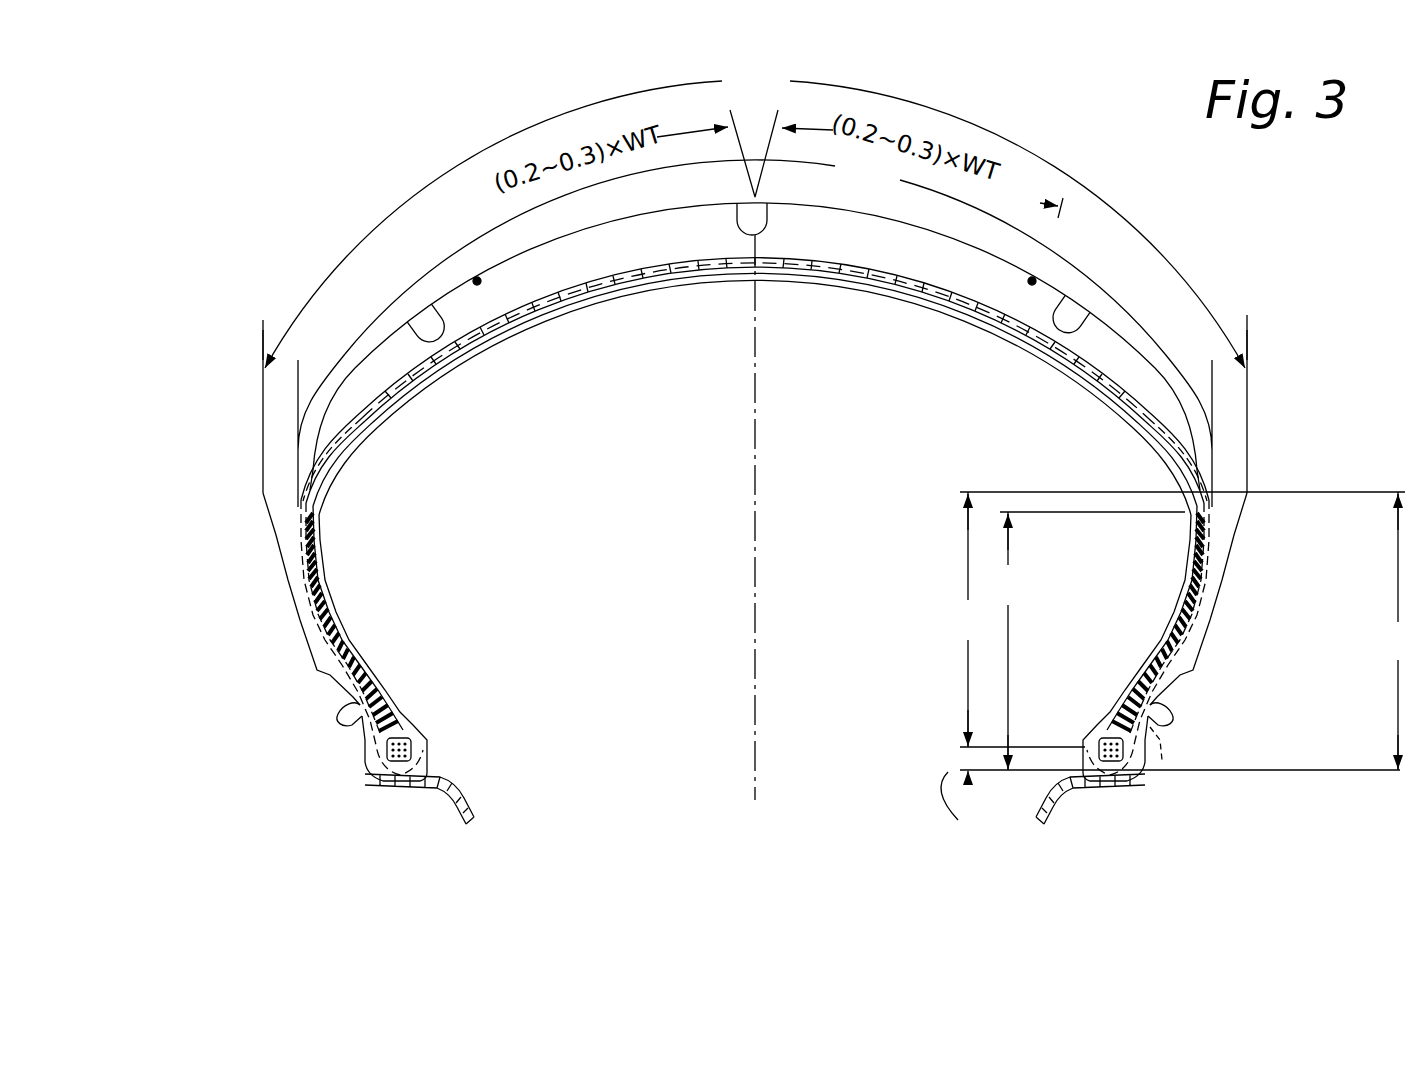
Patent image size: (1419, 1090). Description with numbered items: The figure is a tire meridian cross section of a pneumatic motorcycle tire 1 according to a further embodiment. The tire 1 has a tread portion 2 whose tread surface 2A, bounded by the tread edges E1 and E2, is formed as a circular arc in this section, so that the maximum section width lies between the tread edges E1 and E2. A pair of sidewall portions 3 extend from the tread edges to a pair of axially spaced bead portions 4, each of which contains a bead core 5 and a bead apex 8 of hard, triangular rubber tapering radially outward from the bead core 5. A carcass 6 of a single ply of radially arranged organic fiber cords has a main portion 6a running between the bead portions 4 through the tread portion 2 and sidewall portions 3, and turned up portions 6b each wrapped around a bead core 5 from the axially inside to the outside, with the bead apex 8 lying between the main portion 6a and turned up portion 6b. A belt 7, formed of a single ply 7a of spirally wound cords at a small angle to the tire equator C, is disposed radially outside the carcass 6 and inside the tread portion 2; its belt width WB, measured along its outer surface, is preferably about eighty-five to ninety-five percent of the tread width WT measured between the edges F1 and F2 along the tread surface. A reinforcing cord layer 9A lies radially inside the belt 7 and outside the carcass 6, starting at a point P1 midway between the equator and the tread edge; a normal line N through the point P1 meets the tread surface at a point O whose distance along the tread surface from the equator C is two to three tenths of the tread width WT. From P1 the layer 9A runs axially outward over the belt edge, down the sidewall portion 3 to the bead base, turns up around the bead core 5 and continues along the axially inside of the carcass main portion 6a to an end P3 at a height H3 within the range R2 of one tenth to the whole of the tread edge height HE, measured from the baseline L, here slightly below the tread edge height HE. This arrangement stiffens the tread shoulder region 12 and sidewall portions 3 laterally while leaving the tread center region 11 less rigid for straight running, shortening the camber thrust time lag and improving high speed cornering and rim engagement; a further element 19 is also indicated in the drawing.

The pneumatic motorcycle tire 1 is at (1180, 262).
The tread portion 2 is at (1032, 280).
The tread surface 2A is at (755, 263).
The sidewall portion 3 is at (278, 632).
The bead portion 4 is at (430, 740).
The bead core 5 is at (395, 758).
The carcass 6 is at (796, 602).
The carcass main portion 6a is at (383, 430).
The carcass turned up portion 6b is at (323, 573).
The belt 7 is at (642, 288).
The belt ply 7a is at (903, 288).
The bead apex 8 is at (352, 698).
The reinforcing cord layer 9A is at (433, 388).
The tread center region 11 is at (683, 190).
The tread shoulder region 12 is at (338, 383).
The chafer 19 is at (1160, 735).
The tire equator C is at (760, 740).
The baseline L is at (1305, 772).
The normal line N is at (517, 298).
The point O is at (513, 367).
The point P1 is at (498, 300).
The end P3 is at (316, 530).
The tread edge E1 is at (263, 493).
The tread edge E2 is at (1247, 493).
The belt edge F1 is at (298, 508).
The belt edge F2 is at (1212, 500).
The tread width WT is at (753, 131).
The belt width WB is at (862, 181).
The range R2 is at (961, 619).
The height H3 is at (1007, 641).
The tread edge height HE is at (1157, 679).